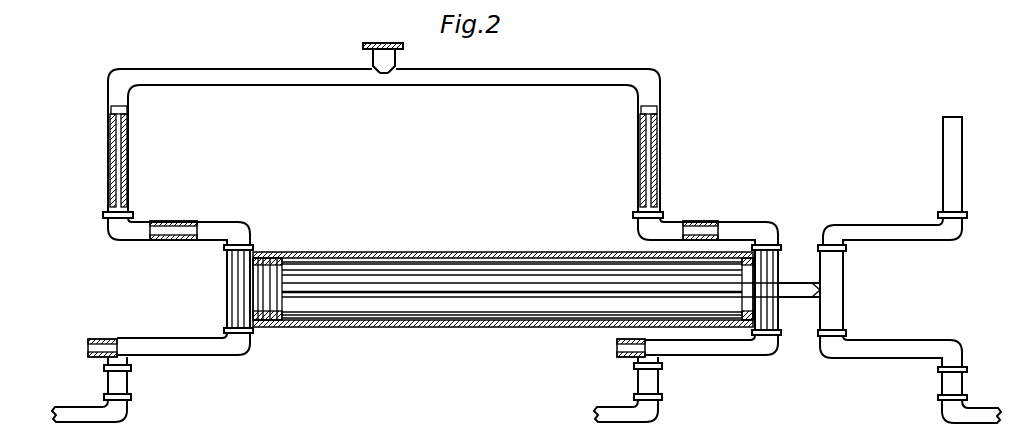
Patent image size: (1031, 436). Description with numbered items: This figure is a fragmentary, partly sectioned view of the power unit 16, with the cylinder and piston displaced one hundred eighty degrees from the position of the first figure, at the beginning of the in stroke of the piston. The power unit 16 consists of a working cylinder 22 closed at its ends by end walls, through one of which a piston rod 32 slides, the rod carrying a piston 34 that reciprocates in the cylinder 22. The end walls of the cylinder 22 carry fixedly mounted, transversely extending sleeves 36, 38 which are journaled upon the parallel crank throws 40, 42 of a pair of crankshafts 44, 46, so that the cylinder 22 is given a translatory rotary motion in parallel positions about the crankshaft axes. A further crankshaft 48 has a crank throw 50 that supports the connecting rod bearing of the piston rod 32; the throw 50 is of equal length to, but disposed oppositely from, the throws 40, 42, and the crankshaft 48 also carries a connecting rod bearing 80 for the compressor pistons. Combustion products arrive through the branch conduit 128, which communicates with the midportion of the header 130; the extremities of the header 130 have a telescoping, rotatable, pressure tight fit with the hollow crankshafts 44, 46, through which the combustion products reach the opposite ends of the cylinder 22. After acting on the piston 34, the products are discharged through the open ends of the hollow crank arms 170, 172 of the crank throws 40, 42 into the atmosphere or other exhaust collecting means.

The power unit 16 is at (423, 250).
The cylinder 22 is at (435, 325).
The piston rod 32 is at (562, 290).
The piston 34 is at (286, 261).
The sleeve 36 is at (227, 255).
The sleeve 38 is at (780, 264).
The crank throw 40 is at (245, 245).
The crank throw 42 is at (773, 238).
The crankshaft 44 is at (137, 218).
The crankshaft 46 is at (668, 216).
The crankshaft 48 is at (964, 190).
The crank throw 50 is at (830, 348).
The connecting rod bearing 80 is at (838, 281).
The branch conduit 128 is at (375, 57).
The header 130 is at (318, 79).
The crank arm 170 is at (194, 350).
The crank arm 172 is at (720, 350).